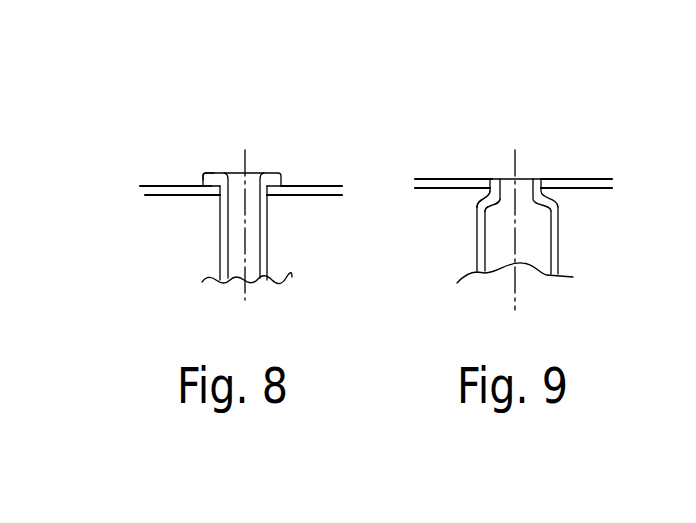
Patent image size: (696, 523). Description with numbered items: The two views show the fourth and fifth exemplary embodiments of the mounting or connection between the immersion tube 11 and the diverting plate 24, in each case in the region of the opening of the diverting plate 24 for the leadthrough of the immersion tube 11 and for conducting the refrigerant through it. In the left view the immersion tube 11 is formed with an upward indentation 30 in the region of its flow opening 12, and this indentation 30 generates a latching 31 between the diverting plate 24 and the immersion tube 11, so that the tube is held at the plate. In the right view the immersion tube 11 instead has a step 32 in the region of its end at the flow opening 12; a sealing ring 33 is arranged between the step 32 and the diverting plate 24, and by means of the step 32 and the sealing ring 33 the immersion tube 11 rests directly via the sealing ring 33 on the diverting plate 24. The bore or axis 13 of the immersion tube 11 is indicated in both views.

In FIG. 8, the immersion tube 11 is at (220, 240).
In FIG. 9, the immersion tube 11 is at (480, 250).
In FIG. 8, the flow opening 12 is at (234, 160).
In FIG. 9, the flow opening 12 is at (498, 167).
In FIG. 8, the bore 13 is at (247, 155).
In FIG. 9, the bore 13 is at (515, 158).
In FIG. 8, the diverting plate 24 is at (318, 184).
In FIG. 9, the diverting plate 24 is at (600, 177).
In FIG. 8, the indentation 30 is at (203, 176).
In FIG. 8, the latching 31 is at (205, 183).
In FIG. 9, the step 32 is at (502, 203).
In FIG. 9, the sealing ring 33 is at (480, 198).